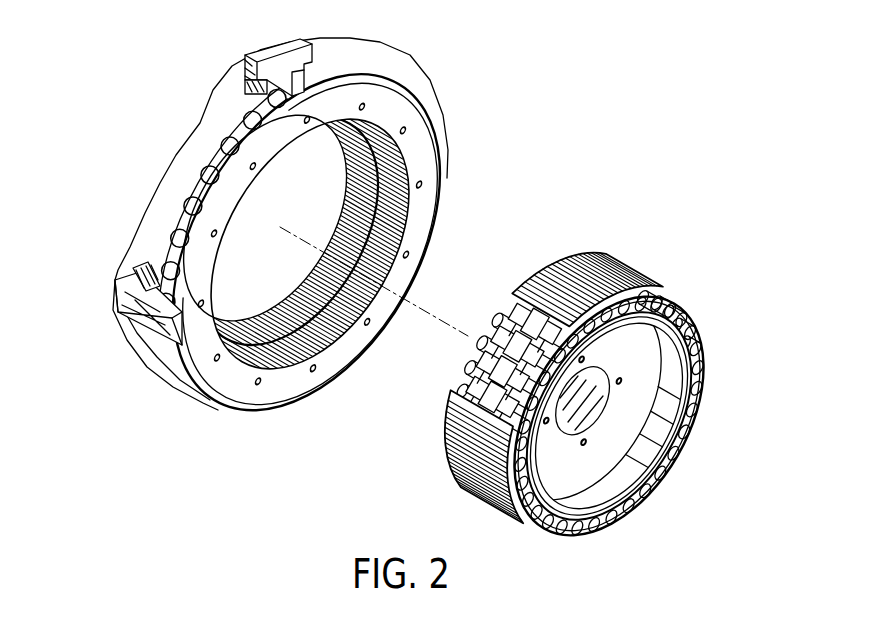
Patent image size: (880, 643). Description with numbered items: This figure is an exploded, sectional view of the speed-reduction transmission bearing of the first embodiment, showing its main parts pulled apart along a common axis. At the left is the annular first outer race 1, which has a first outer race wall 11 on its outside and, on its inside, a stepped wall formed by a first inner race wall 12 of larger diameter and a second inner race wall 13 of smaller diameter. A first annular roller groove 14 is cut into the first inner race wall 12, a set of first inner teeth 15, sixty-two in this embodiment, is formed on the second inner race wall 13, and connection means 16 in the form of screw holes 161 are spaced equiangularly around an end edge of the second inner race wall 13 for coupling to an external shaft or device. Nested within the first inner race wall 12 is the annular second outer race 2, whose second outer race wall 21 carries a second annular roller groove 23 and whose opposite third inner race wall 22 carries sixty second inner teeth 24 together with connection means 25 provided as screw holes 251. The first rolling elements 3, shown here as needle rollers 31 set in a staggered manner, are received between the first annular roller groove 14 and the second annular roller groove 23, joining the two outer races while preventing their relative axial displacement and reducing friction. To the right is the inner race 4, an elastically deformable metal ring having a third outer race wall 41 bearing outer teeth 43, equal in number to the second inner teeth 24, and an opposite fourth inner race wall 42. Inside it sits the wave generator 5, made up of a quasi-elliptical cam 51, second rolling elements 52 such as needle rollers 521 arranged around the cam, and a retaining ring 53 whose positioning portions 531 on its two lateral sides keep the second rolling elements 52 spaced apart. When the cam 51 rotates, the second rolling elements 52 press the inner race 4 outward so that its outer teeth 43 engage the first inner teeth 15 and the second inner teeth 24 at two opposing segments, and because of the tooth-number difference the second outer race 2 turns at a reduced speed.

The first outer race 1 is at (175, 322).
The first outer race wall 11 is at (115, 298).
The first inner race wall 12 is at (215, 370).
The second inner race wall 13 is at (147, 268).
The first annular roller groove 14 is at (163, 308).
The first inner teeth 15 is at (352, 95).
The connection means 16 is at (247, 57).
The screw holes 161 is at (256, 87).
The second outer race 2 is at (228, 392).
The second outer race wall 21 is at (255, 143).
The third inner race wall 22 is at (276, 372).
The second annular roller groove 23 is at (310, 73).
The second inner teeth 24 is at (322, 358).
The connection means 25 is at (408, 122).
The screw holes 251 is at (406, 255).
The first rolling elements 3 is at (190, 177).
The needle rollers 31 is at (170, 198).
The inner race 4 is at (573, 538).
The third outer race wall 41 is at (478, 500).
The fourth inner race wall 42 is at (637, 490).
The outer teeth 43 is at (447, 440).
The wave generator 5 is at (688, 373).
The cam 51 is at (693, 345).
The second rolling elements 52 is at (673, 283).
The needle rollers 521 is at (687, 292).
The retaining ring 53 is at (540, 316).
The positioning portions 531 is at (492, 330).